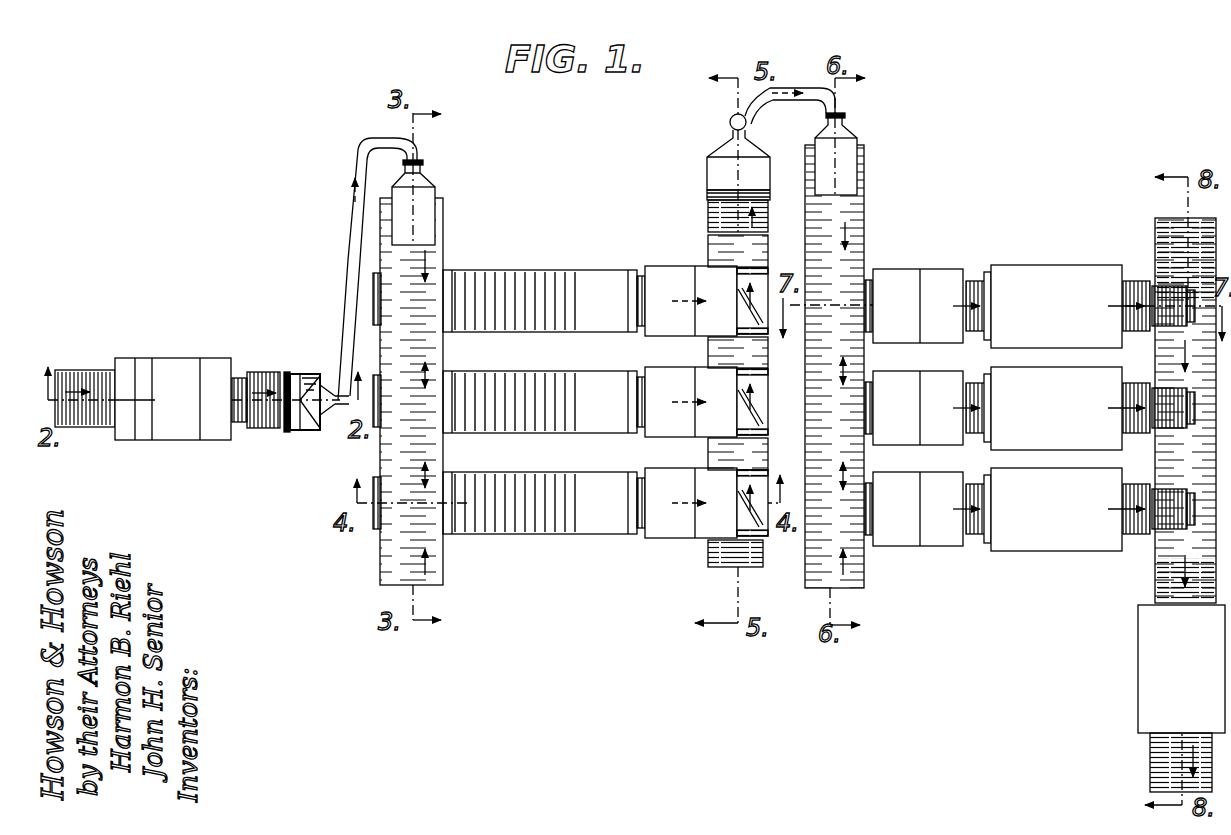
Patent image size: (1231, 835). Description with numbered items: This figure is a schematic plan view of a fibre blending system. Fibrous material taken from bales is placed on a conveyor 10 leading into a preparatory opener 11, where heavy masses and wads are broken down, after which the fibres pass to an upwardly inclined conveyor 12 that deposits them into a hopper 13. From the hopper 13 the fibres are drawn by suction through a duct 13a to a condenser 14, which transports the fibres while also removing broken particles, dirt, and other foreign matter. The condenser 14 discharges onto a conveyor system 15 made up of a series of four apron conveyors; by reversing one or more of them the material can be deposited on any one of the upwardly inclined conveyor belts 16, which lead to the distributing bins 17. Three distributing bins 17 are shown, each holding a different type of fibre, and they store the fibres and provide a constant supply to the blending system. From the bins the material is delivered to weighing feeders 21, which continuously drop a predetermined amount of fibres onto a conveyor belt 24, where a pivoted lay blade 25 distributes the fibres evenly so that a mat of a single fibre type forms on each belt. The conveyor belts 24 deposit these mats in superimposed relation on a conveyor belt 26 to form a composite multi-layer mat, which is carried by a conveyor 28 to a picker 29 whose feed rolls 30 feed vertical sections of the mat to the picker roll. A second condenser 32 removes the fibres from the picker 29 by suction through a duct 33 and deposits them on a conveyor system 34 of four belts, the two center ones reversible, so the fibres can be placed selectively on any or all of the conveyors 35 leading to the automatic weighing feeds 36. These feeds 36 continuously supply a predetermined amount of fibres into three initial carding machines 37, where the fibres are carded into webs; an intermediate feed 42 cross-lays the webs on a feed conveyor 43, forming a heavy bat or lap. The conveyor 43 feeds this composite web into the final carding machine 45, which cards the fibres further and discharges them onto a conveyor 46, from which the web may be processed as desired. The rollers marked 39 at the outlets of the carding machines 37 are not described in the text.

The conveyor 10 is at (91, 378).
The preparatory opener 11 is at (182, 368).
The upwardly inclined conveyor 12 is at (262, 378).
The hopper 13 is at (313, 432).
The duct 13a is at (348, 256).
The condenser 14 is at (432, 197).
The conveyor system 15 is at (446, 266).
The upwardly inclined conveyor belts 16 is at (375, 374).
The distributing bins 17 is at (560, 270).
The weighing feeders 21 is at (655, 266).
The conveyor belt 24 is at (770, 272).
The lay blade 25 is at (742, 320).
The conveyor belt 26 is at (706, 356).
The conveyor 28 is at (706, 212).
The picker 29 is at (712, 181).
The feed rolls 30 is at (768, 199).
The condenser 32 is at (852, 148).
The duct 33 is at (795, 102).
The conveyor system 34 is at (866, 225).
The conveyors 35 is at (870, 285).
The automatic weighing feeds 36 is at (956, 272).
The initial carding machines 37 is at (1052, 272).
The outlet roller 39 is at (1130, 282).
The intermediate feed 42 is at (1190, 332).
The feed conveyor 43 is at (1156, 228).
The final carding machine 45 is at (1140, 668).
The conveyor 46 is at (1150, 766).